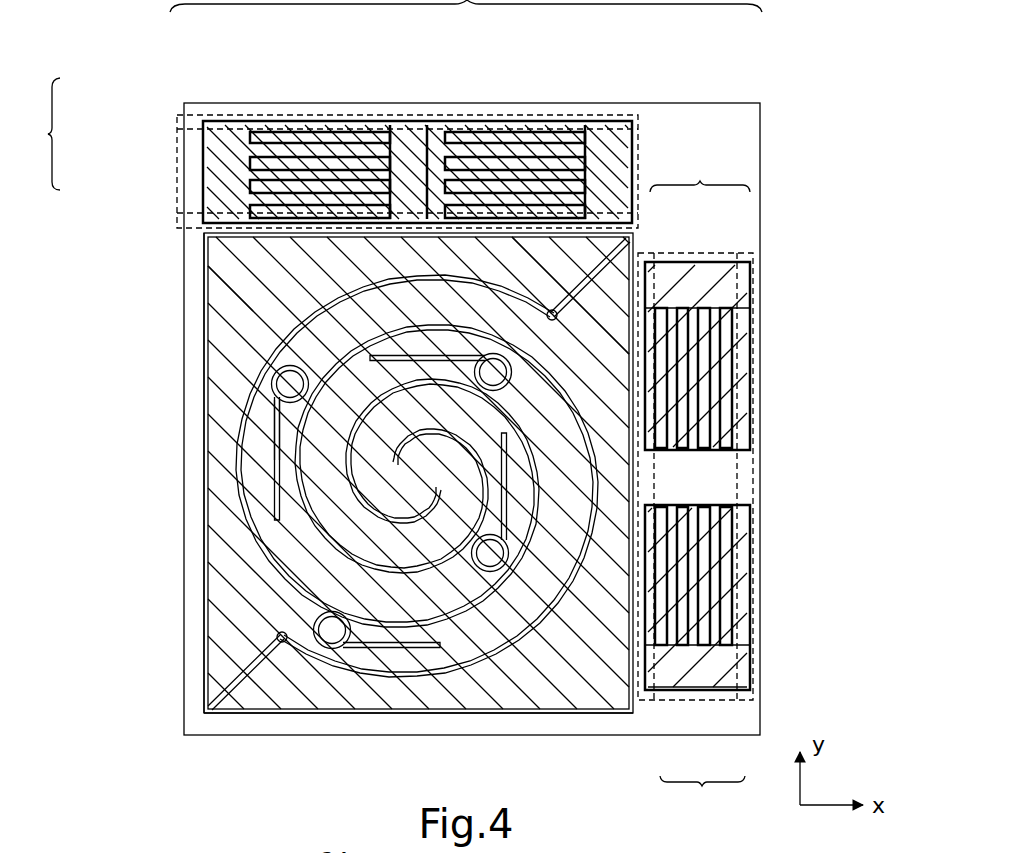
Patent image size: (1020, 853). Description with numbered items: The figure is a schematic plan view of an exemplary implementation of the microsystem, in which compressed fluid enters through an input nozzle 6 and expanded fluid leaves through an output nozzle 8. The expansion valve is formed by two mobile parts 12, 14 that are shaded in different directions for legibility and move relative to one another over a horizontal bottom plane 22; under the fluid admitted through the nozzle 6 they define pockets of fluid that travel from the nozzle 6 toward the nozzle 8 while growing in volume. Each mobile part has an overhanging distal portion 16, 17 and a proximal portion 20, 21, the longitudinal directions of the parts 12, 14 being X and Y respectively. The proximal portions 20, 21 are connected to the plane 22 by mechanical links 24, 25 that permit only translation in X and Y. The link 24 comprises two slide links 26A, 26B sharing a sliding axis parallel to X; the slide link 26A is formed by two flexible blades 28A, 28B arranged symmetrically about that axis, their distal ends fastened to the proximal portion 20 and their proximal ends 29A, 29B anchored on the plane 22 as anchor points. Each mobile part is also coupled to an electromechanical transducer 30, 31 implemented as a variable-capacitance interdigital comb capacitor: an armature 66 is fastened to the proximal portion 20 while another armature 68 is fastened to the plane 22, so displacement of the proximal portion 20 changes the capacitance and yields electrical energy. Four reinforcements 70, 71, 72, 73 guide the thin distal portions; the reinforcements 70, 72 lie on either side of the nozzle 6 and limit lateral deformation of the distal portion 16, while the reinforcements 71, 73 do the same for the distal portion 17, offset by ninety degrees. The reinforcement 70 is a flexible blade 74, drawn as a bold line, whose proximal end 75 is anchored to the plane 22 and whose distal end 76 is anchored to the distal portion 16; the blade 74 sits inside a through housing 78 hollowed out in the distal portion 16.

The input nozzle 6 is at (360, 543).
The output nozzle 8 is at (556, 321).
The mobile part 12 is at (587, 714).
The mobile part 14 is at (203, 290).
The distal portion 16 is at (548, 692).
The distal portion 17 is at (262, 300).
The proximal portion 20 is at (722, 480).
The proximal portion 21 is at (422, 145).
The bottom plane 22 is at (742, 124).
The mechanical link 24 is at (700, 174).
The mechanical link 25 is at (327, 153).
The slide link 26A is at (177, 121).
The slide link 26B is at (177, 220).
The flexible blade 28A is at (752, 395).
The flexible blade 28B is at (752, 575).
The proximal end 29A is at (742, 300).
The proximal end 29B is at (752, 645).
The electromechanical transducer 30 is at (697, 748).
The electromechanical transducer 31 is at (172, 155).
The armature 66 is at (455, 148).
The armature 68 is at (515, 150).
The reinforcement 70 is at (268, 393).
The reinforcement 71 is at (345, 650).
The reinforcement 72 is at (492, 570).
The reinforcement 73 is at (490, 350).
The flexible blade 74 is at (272, 510).
The proximal end 75 is at (300, 392).
The distal end 76 is at (262, 532).
The housing 78 is at (275, 457).